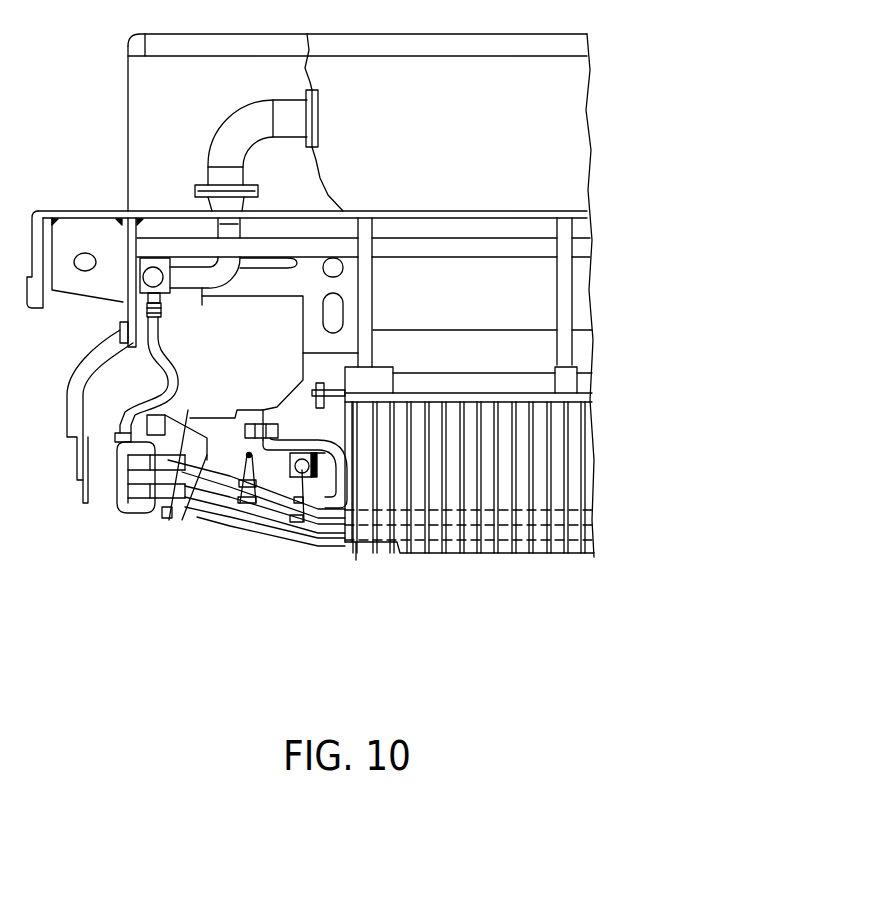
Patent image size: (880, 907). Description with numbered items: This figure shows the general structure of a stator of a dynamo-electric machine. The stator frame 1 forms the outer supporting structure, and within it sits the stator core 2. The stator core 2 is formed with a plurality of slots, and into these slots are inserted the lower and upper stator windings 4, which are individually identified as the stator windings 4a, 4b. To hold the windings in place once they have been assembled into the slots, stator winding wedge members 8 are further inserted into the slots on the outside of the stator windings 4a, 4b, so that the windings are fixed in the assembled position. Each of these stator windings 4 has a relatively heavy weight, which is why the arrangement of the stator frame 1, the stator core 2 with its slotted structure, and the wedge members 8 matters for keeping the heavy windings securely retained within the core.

The stator frame 1 is at (80, 237).
The stator core 2 is at (453, 497).
The stator windings 4 is at (272, 500).
The stator winding 4a is at (218, 515).
The stator winding 4b is at (170, 520).
The stator winding wedge member 8 is at (521, 543).